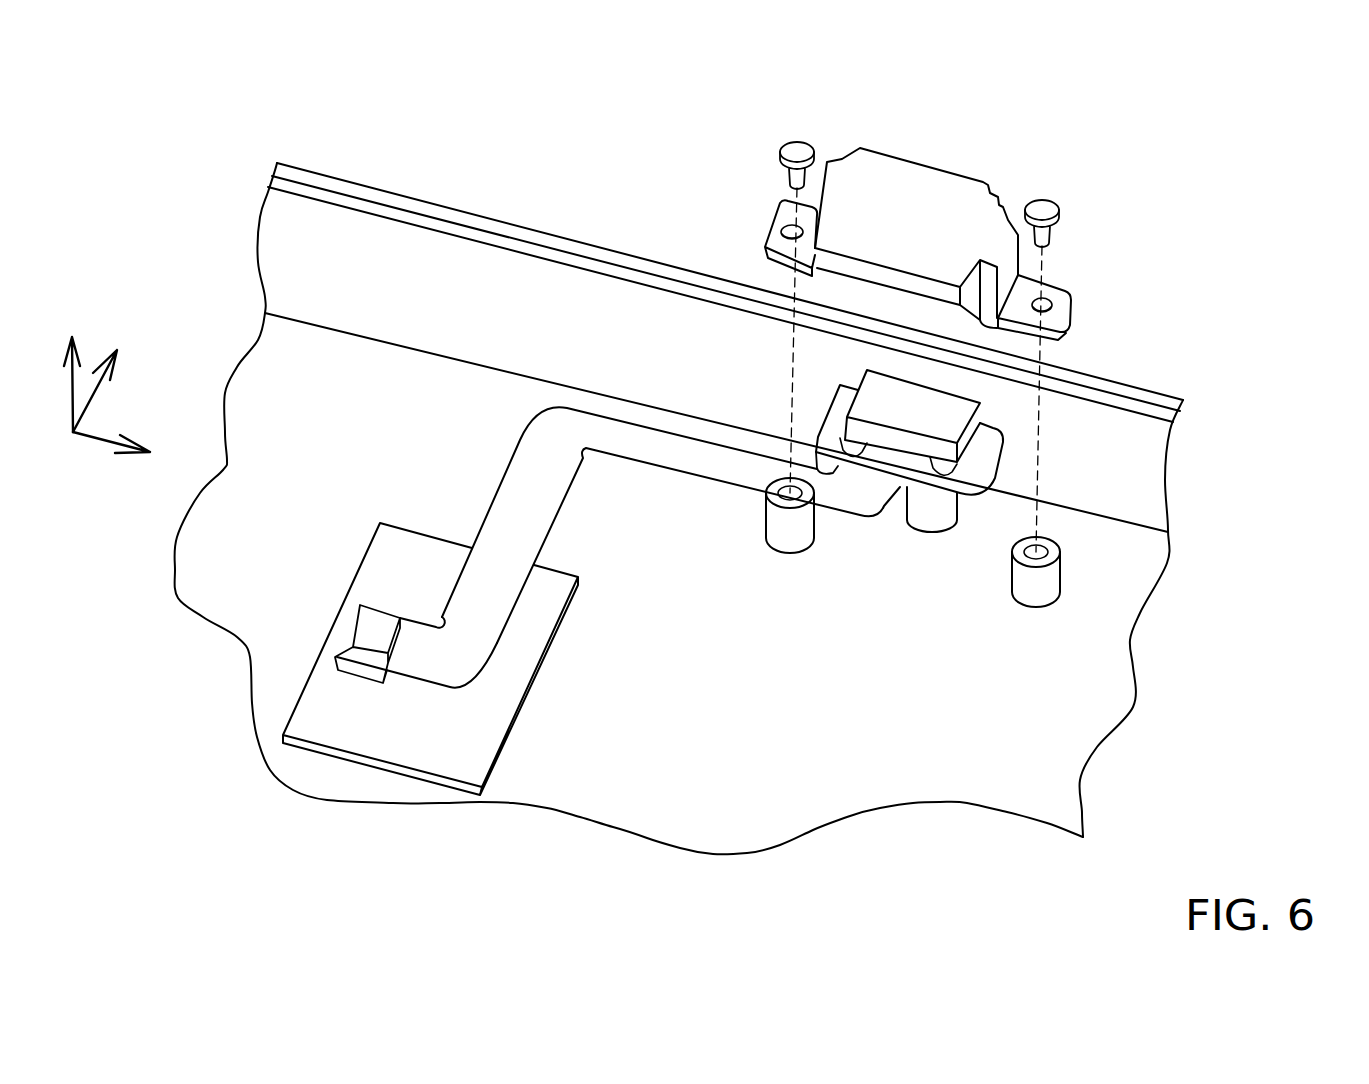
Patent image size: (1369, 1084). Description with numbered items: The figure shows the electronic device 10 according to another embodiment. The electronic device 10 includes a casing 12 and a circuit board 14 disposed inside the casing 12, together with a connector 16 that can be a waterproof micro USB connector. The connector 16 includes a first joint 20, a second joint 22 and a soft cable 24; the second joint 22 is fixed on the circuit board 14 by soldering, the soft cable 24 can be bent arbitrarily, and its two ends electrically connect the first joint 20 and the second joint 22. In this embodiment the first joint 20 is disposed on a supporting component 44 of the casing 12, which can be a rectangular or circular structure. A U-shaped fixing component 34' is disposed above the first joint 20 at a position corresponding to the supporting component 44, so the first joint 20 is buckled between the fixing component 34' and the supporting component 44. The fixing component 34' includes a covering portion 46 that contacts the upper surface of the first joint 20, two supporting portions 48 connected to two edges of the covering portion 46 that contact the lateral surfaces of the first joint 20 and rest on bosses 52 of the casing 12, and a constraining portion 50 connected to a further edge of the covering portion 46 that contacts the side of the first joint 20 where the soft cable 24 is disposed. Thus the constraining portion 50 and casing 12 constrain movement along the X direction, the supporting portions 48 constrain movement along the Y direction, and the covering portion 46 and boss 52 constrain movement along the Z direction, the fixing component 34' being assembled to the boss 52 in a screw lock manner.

The electronic device 10 is at (702, 465).
The casing 12 is at (1120, 453).
The circuit board 14 is at (330, 698).
The connector 16 is at (669, 581).
The first joint 20 is at (897, 438).
The second joint 22 is at (387, 632).
The soft cable 24 is at (573, 433).
The fixing component 34' is at (966, 244).
The supporting component 44 is at (932, 512).
The covering portion 46 is at (933, 200).
The supporting portions 48 is at (777, 226).
The constraining portion 50 is at (920, 292).
The boss 52 is at (768, 520).